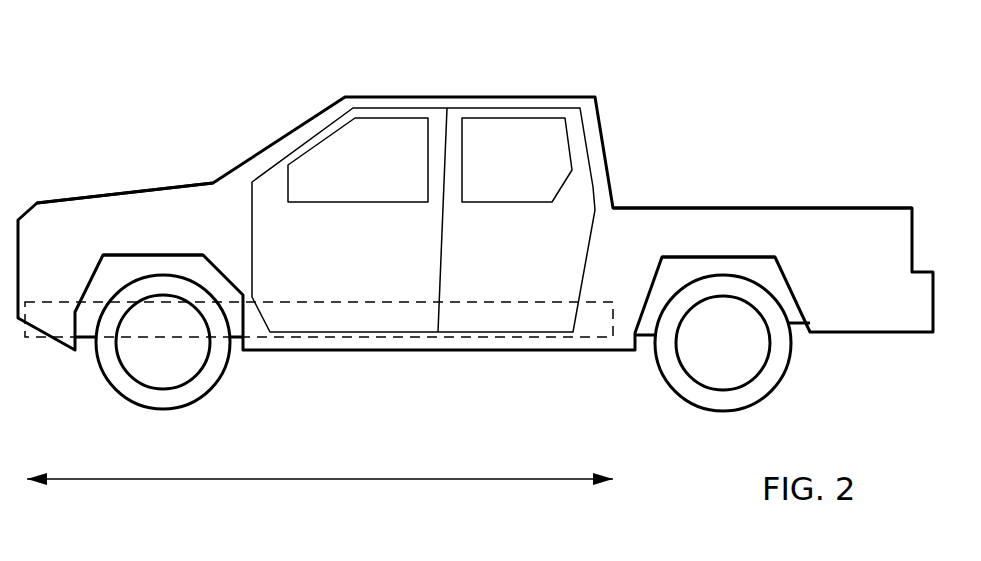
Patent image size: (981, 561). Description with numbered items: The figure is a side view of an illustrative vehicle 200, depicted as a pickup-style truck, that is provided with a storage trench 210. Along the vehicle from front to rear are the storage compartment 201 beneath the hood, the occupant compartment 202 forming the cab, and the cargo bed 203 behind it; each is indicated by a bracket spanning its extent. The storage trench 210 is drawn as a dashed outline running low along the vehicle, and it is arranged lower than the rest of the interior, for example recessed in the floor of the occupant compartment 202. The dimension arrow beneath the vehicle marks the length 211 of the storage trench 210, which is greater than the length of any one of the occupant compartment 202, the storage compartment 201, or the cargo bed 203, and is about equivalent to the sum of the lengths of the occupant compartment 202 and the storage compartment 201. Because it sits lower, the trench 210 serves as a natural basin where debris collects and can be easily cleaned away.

The vehicle 200 is at (878, 48).
The storage compartment 201 is at (222, 72).
The occupant compartment 202 is at (603, 72).
The cargo bed 203 is at (905, 162).
The storage trench 210 is at (317, 337).
The length 211 is at (320, 490).